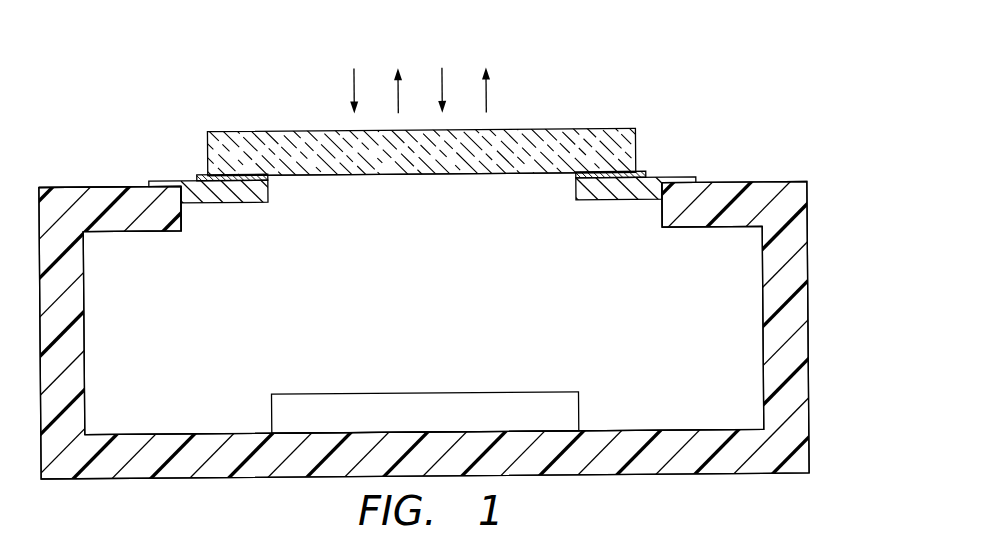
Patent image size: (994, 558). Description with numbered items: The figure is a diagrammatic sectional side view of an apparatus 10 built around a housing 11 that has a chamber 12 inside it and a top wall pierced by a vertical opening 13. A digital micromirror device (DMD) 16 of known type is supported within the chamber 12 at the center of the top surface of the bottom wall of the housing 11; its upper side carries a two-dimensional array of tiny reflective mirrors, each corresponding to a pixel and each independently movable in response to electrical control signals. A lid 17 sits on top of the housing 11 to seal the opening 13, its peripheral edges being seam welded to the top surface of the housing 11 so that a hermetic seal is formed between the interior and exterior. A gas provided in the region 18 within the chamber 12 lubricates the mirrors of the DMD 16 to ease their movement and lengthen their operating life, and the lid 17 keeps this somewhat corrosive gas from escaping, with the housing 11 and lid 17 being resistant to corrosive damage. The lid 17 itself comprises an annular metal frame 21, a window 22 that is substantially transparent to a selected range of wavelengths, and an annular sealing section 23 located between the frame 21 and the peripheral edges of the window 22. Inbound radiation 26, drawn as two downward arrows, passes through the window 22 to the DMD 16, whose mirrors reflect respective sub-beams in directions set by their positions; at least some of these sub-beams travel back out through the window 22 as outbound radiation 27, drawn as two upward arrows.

The apparatus 10 is at (620, 60).
The housing 11 is at (63, 197).
The chamber 12 is at (85, 328).
The vertical opening 13 is at (183, 220).
The digital micromirror device (DMD) 16 is at (334, 392).
The lid 17 is at (240, 120).
The region 18 is at (686, 366).
The annular metal frame 21 is at (238, 201).
The window 22 is at (420, 175).
The annular sealing section 23 is at (195, 168).
The inbound radiation 26 is at (354, 85).
The outbound radiation 27 is at (490, 97).